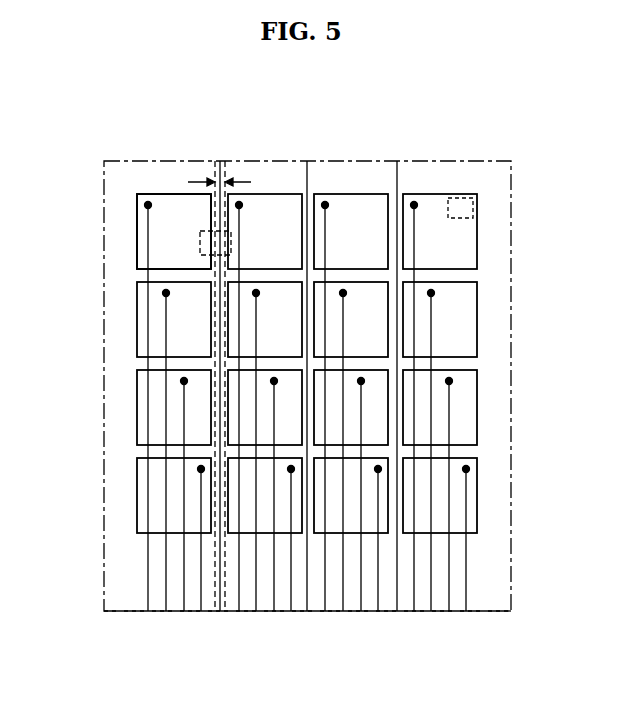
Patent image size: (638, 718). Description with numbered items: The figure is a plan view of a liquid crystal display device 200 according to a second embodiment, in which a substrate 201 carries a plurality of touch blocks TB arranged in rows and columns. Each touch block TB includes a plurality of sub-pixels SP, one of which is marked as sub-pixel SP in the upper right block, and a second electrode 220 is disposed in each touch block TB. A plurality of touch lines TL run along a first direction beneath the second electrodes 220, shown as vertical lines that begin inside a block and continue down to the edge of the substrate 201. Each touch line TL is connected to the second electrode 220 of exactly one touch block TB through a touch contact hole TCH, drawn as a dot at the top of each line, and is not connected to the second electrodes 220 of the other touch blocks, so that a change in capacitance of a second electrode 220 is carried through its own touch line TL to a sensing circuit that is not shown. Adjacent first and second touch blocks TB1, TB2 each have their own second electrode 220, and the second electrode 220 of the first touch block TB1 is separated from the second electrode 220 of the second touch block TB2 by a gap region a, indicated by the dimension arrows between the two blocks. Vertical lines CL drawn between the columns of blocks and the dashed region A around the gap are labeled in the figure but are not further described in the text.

The liquid crystal display device 200 is at (475, 138).
The substrate 201 is at (325, 665).
The second electrode 220 is at (174, 204).
The first touch block TB1 is at (137, 241).
The second touch block TB2 is at (295, 193).
The touch block TB is at (478, 241).
The touch line TL is at (146, 279).
The touch contact hole TCH is at (139, 204).
The connection line CL is at (397, 177).
The sub-pixel SP is at (460, 208).
The region A is at (200, 243).
The gap region a is at (219, 175).